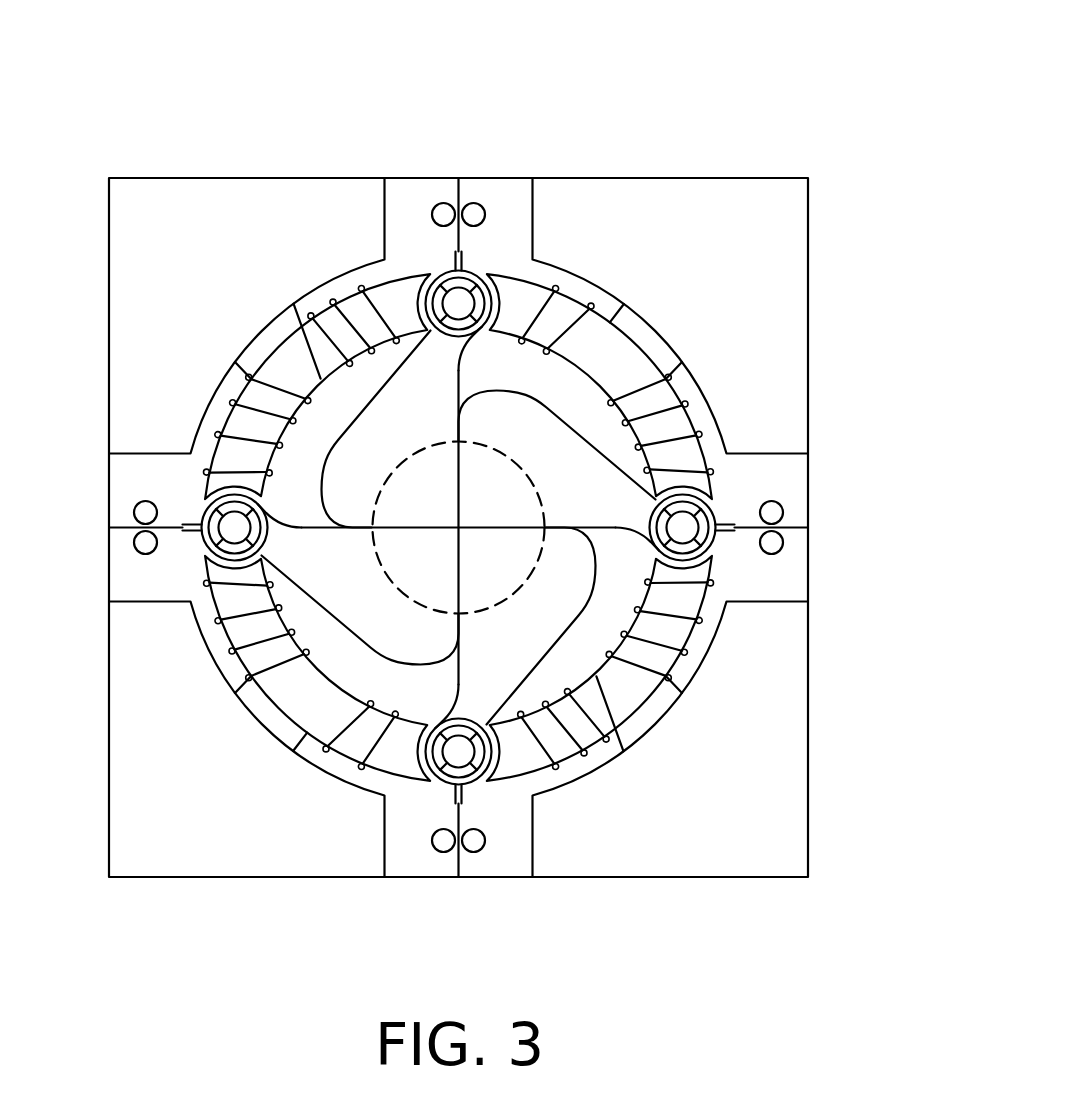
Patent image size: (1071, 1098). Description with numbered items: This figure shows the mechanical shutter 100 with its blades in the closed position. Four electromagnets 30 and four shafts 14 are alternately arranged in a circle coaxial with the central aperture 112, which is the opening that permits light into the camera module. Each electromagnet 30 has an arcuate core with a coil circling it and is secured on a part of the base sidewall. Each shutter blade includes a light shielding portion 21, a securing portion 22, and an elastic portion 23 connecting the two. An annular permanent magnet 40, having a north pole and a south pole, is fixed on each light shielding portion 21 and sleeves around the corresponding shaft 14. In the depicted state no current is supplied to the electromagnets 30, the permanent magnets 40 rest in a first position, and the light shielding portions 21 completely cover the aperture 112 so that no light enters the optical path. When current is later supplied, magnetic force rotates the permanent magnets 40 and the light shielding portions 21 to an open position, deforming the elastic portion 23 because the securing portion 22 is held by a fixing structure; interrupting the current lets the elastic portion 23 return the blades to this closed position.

The mechanical shutter 100 is at (506, 447).
The aperture 112 is at (412, 486).
The shaft 14 is at (685, 525).
The light shielding portion 21 is at (547, 433).
The securing portion 22 is at (461, 184).
The elastic portion 23 is at (456, 264).
The electromagnet 30 is at (247, 372).
The permanent magnet 40 is at (700, 543).